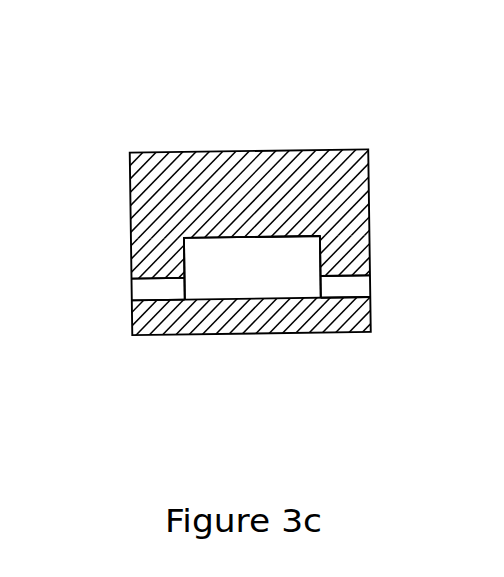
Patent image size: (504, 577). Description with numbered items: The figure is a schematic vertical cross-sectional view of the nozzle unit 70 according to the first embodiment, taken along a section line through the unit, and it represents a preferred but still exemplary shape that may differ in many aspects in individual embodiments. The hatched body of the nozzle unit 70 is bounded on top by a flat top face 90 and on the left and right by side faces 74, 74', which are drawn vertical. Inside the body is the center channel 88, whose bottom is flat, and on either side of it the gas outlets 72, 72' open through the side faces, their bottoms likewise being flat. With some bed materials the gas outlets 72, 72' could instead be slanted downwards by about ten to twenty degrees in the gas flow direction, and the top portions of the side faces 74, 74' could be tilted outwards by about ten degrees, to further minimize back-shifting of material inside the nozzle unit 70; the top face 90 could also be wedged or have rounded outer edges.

The nozzle unit 70 is at (252, 232).
The top face 90 is at (250, 152).
The side face 74 is at (252, 243).
The side face 74' is at (252, 243).
The gas outlet 72 is at (115, 308).
The gas outlet 72' is at (385, 301).
The center channel 88 is at (263, 280).